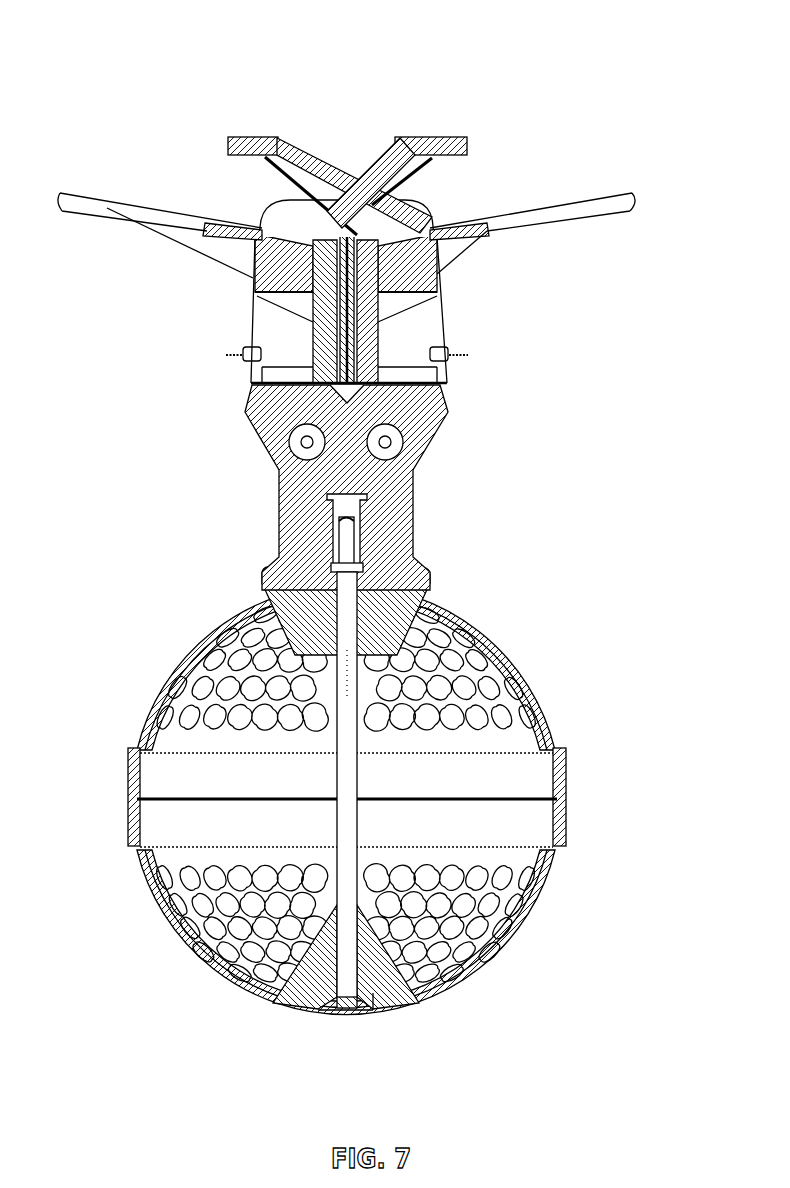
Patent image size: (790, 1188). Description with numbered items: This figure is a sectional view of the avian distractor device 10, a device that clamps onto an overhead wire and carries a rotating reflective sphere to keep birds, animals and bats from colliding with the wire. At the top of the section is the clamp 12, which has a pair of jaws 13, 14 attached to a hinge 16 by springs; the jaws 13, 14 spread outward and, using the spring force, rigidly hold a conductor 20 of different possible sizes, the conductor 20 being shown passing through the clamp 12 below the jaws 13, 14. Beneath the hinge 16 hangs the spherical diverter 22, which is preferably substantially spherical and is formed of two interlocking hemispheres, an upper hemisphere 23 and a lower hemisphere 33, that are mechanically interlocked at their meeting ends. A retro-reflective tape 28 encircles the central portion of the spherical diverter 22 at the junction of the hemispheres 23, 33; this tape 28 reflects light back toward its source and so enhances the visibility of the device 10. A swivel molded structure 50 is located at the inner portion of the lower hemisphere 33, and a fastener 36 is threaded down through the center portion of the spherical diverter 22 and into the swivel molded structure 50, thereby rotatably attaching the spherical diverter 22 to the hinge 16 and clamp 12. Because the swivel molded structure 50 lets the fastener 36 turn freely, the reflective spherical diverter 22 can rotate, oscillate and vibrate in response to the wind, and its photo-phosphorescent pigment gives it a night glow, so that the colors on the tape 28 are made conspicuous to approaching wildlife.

The avian distractor device 10 is at (360, 94).
The clamp 12 is at (457, 143).
The jaw 13 is at (108, 207).
The jaw 14 is at (626, 203).
The hinge 16 is at (435, 450).
The conductor 20 is at (434, 320).
The spherical diverter 22 is at (466, 615).
The upper hemisphere 23 is at (490, 672).
The retro-reflective tape 28 is at (558, 778).
The lower hemisphere 33 is at (505, 928).
The fastener 36 is at (348, 588).
The swivel molded structure 50 is at (375, 972).